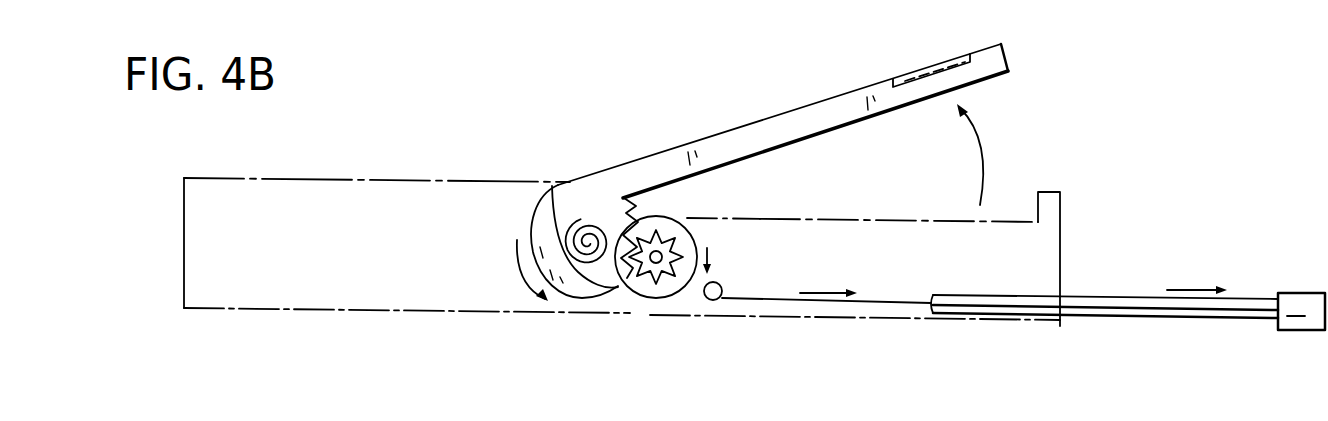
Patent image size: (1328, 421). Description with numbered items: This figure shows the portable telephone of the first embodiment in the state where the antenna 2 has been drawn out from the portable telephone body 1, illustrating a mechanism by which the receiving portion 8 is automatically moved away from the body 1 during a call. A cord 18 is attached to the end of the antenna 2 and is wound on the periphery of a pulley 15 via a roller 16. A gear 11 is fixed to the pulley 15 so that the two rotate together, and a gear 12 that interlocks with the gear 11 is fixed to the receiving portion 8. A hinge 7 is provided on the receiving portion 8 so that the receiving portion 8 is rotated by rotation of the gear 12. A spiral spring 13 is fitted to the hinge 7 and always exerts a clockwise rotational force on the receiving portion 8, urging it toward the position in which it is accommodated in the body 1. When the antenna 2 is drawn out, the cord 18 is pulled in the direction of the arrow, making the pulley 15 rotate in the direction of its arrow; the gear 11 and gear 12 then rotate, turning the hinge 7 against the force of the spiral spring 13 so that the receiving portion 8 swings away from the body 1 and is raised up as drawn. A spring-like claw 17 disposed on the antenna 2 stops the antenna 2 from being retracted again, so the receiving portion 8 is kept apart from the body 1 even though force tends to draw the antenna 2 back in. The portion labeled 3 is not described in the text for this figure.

The portable telephone body 1 is at (324, 180).
The antenna 2 is at (1297, 305).
The slot 3 is at (935, 62).
The hinge 7 is at (583, 198).
The receiving portion 8 is at (673, 157).
The gear 11 is at (667, 247).
The gear 12 is at (625, 275).
The spiral spring 13 is at (550, 185).
The pulley 15 is at (688, 233).
The roller 16 is at (721, 285).
The spring-like claw 17 is at (1066, 288).
The cord 18 is at (737, 302).